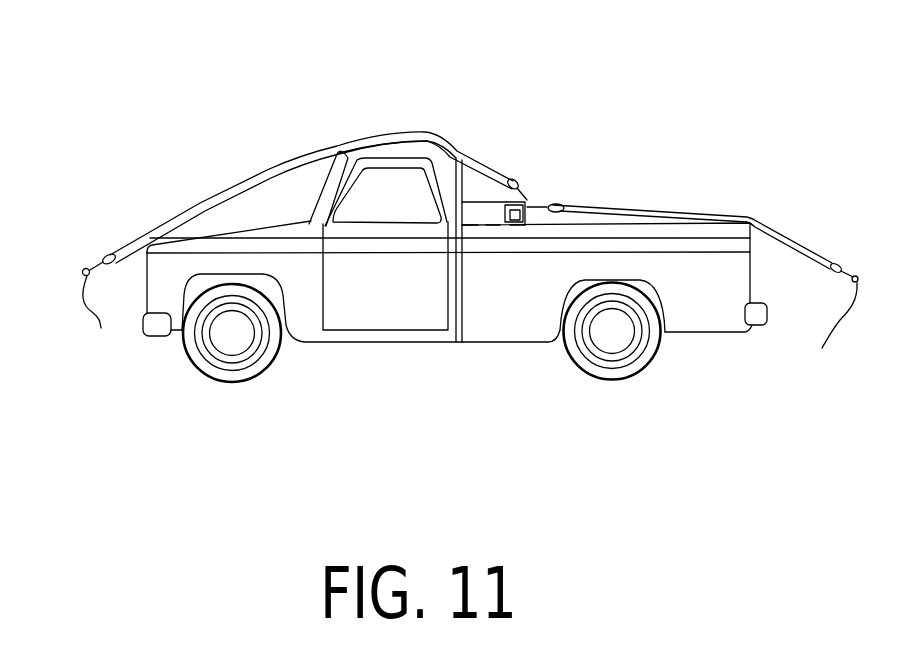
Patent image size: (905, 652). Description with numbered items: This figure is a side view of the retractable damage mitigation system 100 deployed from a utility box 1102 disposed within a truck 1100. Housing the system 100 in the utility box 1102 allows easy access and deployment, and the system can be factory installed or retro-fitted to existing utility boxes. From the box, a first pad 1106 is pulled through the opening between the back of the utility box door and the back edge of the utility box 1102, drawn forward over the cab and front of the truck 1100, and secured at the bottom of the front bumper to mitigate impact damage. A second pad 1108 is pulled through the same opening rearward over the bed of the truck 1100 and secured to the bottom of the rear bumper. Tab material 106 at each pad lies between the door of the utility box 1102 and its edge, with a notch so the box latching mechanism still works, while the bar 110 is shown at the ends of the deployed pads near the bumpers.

The retractable damage mitigation system 100 is at (547, 203).
The tab material 106 is at (88, 267).
The bar 110 is at (466, 332).
The truck 1100 is at (390, 377).
The utility box 1102 is at (472, 210).
The first pad 1106 is at (305, 150).
The second pad 1108 is at (775, 228).